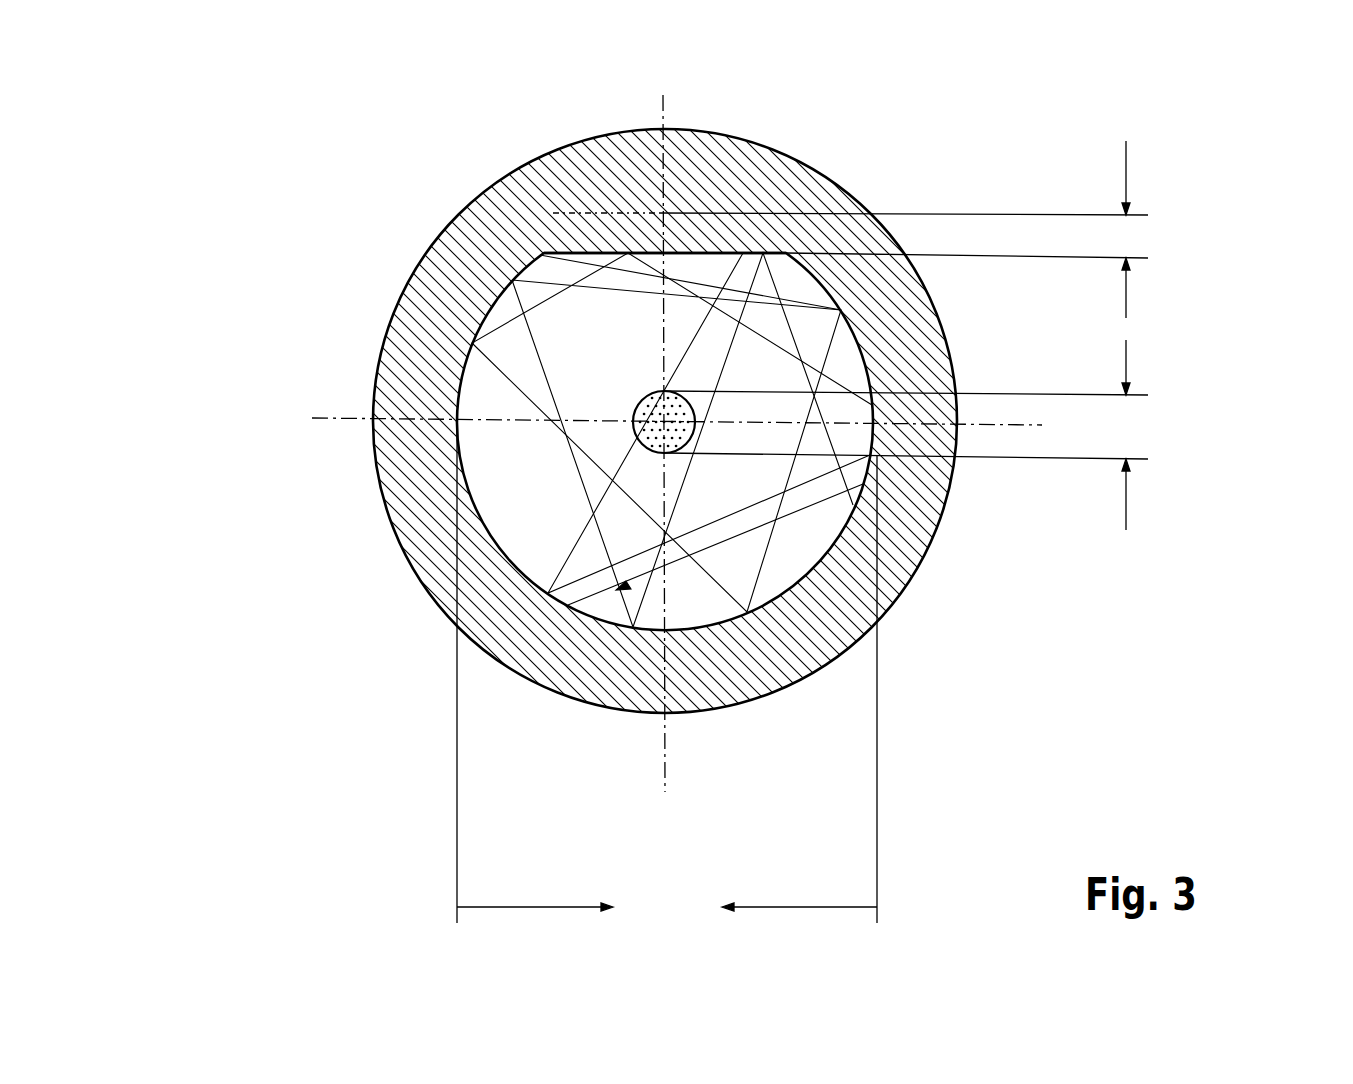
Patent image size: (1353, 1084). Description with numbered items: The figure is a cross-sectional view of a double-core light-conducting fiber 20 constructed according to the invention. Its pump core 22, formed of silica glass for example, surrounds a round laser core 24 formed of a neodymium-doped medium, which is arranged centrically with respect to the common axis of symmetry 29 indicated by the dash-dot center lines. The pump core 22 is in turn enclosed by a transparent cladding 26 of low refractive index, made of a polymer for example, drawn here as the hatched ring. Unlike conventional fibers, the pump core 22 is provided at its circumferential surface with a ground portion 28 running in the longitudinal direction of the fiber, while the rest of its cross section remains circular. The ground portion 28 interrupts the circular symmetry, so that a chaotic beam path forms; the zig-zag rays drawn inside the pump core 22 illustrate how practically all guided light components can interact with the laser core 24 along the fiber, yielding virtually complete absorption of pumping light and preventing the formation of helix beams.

The double-core light-conducting fiber 20 is at (1268, 178).
The pump core 22 is at (497, 506).
The laser core 24 is at (663, 387).
The transparent cladding 26 is at (928, 515).
The ground portion 28 is at (730, 236).
The common axis of symmetry 29 is at (312, 418).